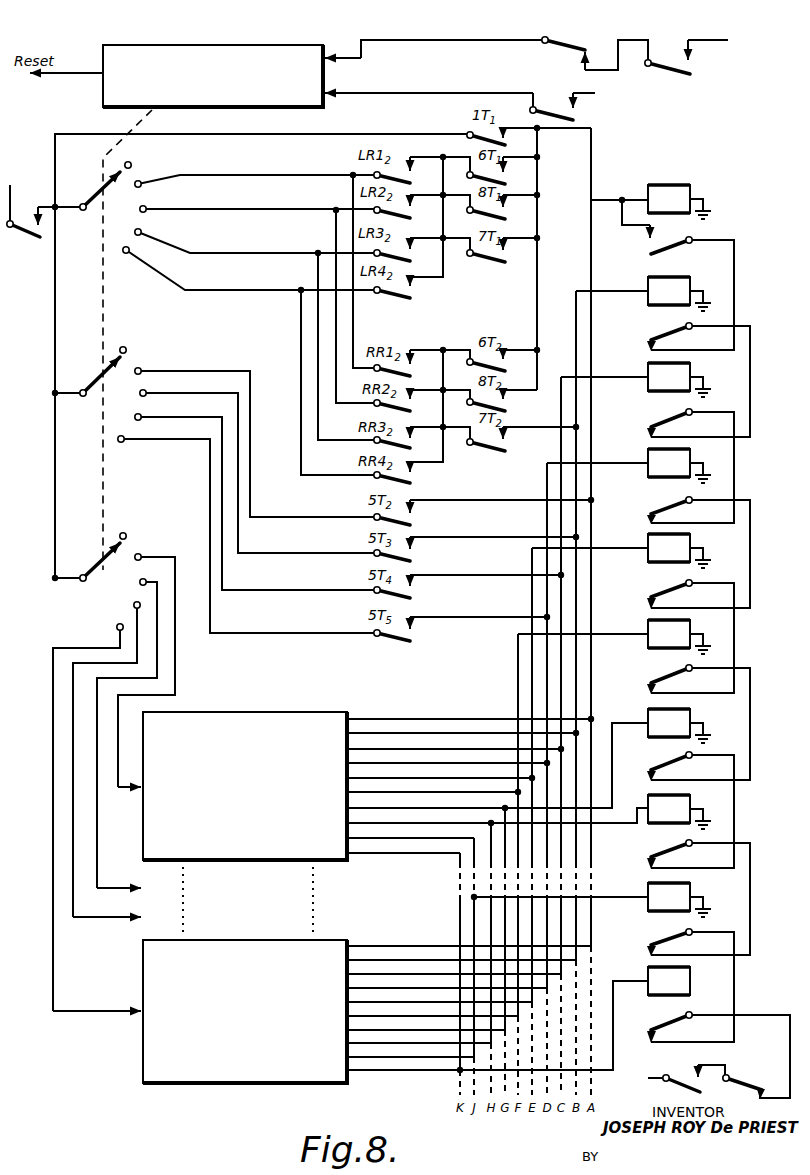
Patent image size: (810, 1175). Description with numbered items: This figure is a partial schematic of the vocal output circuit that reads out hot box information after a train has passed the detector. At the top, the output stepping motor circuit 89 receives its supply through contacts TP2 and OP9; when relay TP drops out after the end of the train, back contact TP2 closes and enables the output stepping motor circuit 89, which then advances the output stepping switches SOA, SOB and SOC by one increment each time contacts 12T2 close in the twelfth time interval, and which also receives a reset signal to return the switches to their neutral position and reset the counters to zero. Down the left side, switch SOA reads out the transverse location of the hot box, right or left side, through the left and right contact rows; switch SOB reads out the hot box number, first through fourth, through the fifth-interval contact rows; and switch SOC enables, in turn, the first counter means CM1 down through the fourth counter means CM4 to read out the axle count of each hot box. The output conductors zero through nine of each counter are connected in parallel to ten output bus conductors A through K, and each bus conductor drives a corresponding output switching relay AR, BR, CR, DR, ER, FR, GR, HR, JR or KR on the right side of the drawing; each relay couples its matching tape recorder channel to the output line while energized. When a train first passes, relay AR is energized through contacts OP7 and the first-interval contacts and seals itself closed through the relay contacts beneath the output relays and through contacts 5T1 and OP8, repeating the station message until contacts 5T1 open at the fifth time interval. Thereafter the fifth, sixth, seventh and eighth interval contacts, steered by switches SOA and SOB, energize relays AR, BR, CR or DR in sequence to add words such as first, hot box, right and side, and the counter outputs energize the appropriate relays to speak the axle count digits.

The output stepping motor circuit 89 is at (172, 30).
The contacts TP2 is at (595, 41).
The contacts OP9 is at (700, 43).
The contacts 12T2 is at (575, 97).
The contacts OP7 is at (21, 213).
The contacts OP8 is at (661, 1070).
The contacts 5T1 is at (734, 1074).
The output stepping switch SOA is at (124, 216).
The output stepping switch SOB is at (124, 402).
The output stepping switch SOC is at (111, 588).
The output switching relay AR is at (678, 267).
The output switching relay BR is at (698, 357).
The output switching relay CR is at (690, 443).
The output switching relay DR is at (698, 528).
The output switching relay ER is at (690, 613).
The output switching relay FR is at (698, 700).
The output switching relay GR is at (690, 788).
The output switching relay HR is at (698, 875).
The output switching relay JR is at (690, 962).
The output switching relay KR is at (718, 1032).
The counter means number 1 CM1 is at (245, 785).
The counter means number 4 CM4 is at (245, 1010).